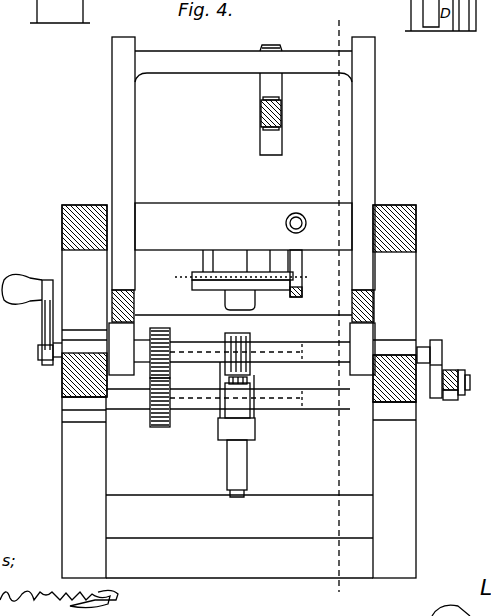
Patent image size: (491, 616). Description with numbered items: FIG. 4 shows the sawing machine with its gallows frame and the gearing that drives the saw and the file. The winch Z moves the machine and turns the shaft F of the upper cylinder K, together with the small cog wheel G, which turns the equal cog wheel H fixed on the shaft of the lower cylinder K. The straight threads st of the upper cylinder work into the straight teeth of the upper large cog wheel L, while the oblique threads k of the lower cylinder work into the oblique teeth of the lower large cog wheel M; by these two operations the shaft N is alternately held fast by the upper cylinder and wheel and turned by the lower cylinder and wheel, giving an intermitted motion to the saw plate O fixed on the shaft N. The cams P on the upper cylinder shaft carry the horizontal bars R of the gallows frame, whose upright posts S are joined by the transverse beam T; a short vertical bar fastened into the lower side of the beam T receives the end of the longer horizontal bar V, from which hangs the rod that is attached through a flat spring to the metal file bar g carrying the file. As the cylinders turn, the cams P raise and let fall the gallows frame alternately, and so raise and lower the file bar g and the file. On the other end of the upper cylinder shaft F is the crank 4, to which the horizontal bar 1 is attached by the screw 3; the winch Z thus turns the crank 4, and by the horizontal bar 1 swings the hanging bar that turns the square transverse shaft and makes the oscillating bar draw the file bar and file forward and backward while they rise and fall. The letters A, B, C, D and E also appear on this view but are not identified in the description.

The transverse beam T is at (243, 63).
The longer horizontal bar V is at (271, 114).
The upright posts S is at (243, 163).
The bearing block A is at (425, 408).
The left frame side B is at (84, 487).
The right bearing block C is at (394, 303).
The right frame side D is at (394, 490).
The section line E-F E is at (336, 306).
The horizontal bars of the gallows frame R is at (243, 306).
The cams P is at (242, 349).
The shaft of the upper cylinder F is at (282, 351).
The small cog wheel G is at (160, 345).
The equal cog wheel H is at (159, 410).
The upper large cog wheel L is at (228, 399).
The lower large cog wheel M is at (243, 352).
The straight threads of the upper cylinder st is at (237, 367).
The oblique threads of the lower cylinder k is at (244, 379).
The cylinder K is at (237, 400).
The shaft N is at (236, 457).
The saw plate O is at (241, 280).
The file bar g is at (296, 283).
The winch Z is at (32, 319).
The crank 4 is at (432, 380).
The horizontal bar 1 is at (450, 370).
The screw 3 is at (467, 383).